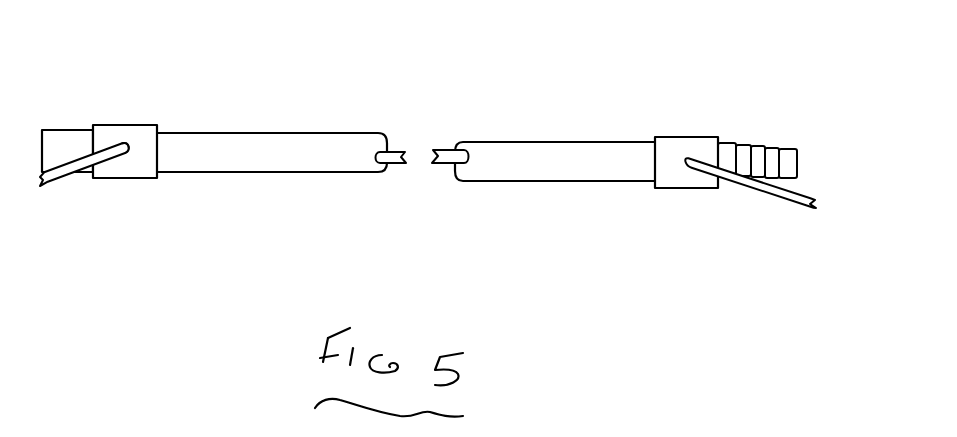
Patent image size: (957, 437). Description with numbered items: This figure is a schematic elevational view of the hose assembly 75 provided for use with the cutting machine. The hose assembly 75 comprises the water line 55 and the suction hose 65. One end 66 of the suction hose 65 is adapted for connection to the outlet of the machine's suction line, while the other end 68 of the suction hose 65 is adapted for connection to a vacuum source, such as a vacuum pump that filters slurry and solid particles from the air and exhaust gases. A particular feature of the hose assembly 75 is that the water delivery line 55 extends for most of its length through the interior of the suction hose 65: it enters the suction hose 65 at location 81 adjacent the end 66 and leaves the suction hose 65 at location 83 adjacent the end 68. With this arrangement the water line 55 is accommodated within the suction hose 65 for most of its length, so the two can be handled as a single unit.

The water line 55 is at (60, 180).
The suction hose 65 is at (298, 136).
The other end of the suction hose 68 is at (108, 132).
The hose assembly 75 is at (535, 142).
The location where the water delivery line enters the suction hose 81 is at (685, 150).
The one end of the suction hose 66 is at (750, 152).
The location where the water delivery line leaves the suction hose 83 is at (127, 150).